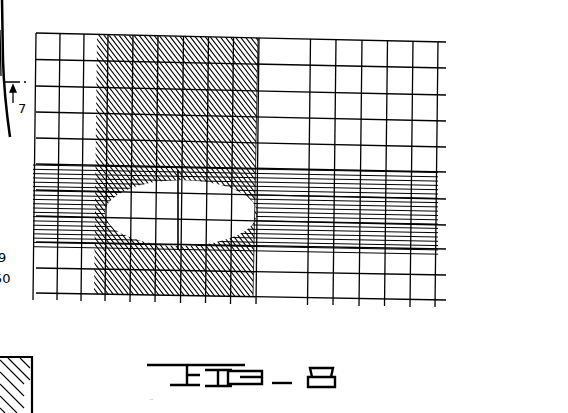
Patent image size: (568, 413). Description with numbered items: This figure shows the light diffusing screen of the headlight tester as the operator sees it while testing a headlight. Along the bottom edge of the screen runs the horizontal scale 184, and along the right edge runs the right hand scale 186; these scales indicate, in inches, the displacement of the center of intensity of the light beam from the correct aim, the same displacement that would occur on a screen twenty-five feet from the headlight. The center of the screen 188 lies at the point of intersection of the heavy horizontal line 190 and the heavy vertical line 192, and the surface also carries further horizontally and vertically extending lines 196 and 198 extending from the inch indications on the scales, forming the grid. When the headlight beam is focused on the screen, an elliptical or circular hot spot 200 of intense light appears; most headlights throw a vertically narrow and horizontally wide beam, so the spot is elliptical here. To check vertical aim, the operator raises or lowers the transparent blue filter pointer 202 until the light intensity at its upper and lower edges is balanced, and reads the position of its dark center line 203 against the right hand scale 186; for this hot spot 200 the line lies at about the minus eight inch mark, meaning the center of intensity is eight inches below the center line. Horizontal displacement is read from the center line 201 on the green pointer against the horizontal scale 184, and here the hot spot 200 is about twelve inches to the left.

The horizontal scale 184 is at (170, 300).
The right hand scale 186 is at (457, 134).
The center of the screen 188 is at (230, 171).
The heavy horizontal line 190 is at (422, 170).
The heavy vertical line 192 is at (240, 283).
The horizontally extending lines 196 is at (287, 54).
The vertically extending lines 198 is at (420, 93).
The hot spot 200 is at (93, 221).
The center line on the green pointer 201 is at (178, 237).
The blue filter pointer 202 is at (391, 258).
The dark center line 203 is at (343, 217).